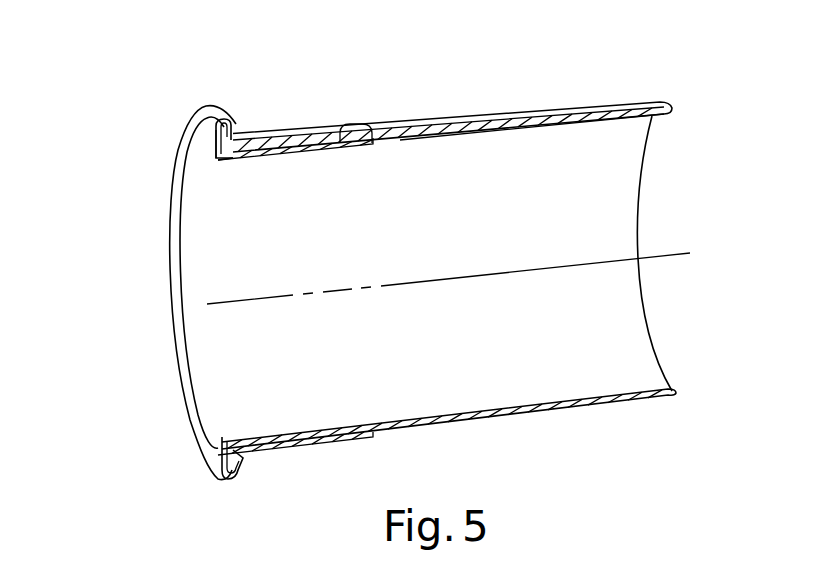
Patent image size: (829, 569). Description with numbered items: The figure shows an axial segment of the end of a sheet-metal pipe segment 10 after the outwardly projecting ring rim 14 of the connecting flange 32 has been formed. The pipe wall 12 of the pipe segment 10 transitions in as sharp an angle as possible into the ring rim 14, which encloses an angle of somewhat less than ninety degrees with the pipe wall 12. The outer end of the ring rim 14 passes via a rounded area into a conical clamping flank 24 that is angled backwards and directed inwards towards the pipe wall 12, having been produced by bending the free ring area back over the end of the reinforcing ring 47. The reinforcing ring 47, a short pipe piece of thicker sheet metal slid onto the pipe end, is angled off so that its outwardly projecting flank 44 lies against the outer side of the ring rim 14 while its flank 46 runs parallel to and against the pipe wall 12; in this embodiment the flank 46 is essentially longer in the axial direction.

The pipe segment 10 is at (508, 126).
The pipe wall 12 is at (452, 133).
The ring rim 14 is at (215, 153).
The clamping flank 24 is at (236, 129).
The connecting flange 32 is at (200, 134).
The outwardly projecting flank 44 is at (218, 156).
The flank running parallel to the pipe wall 46 is at (296, 162).
The reinforcing ring 47 is at (341, 136).